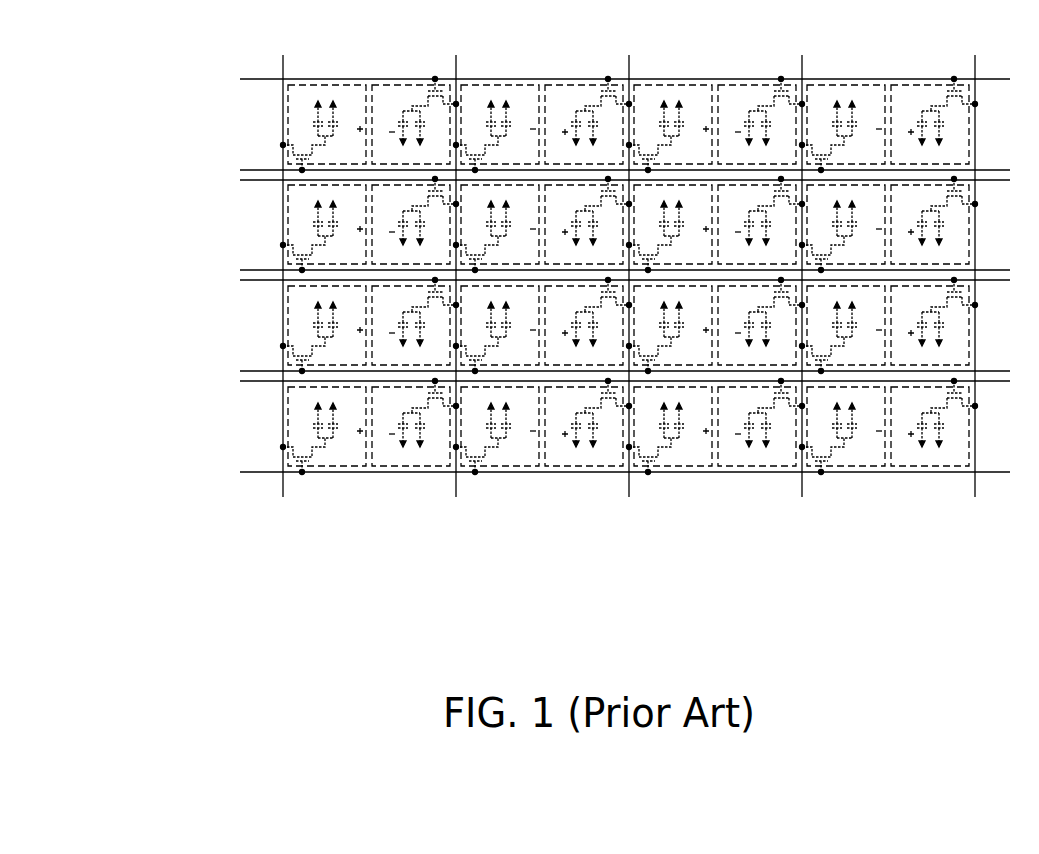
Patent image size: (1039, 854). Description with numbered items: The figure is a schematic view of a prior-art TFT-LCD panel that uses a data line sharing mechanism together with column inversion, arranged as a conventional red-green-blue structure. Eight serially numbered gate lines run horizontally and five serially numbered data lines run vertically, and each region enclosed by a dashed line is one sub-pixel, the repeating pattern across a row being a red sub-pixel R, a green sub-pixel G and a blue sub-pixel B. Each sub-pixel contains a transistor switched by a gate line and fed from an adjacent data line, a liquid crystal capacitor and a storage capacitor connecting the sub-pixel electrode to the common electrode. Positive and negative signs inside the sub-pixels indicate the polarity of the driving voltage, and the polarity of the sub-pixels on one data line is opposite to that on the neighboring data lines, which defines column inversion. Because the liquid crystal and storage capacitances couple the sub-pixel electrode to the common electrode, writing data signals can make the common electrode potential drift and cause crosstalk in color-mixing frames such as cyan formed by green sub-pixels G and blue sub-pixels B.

The red sub-pixel R is at (364, 85).
The green sub-pixel G is at (383, 92).
The blue sub-pixel B is at (525, 100).